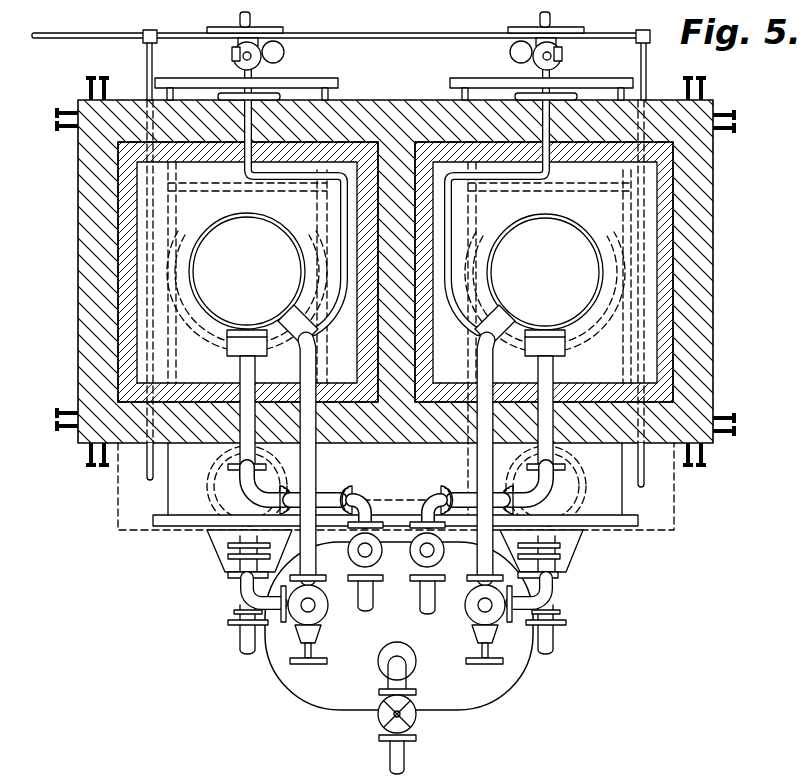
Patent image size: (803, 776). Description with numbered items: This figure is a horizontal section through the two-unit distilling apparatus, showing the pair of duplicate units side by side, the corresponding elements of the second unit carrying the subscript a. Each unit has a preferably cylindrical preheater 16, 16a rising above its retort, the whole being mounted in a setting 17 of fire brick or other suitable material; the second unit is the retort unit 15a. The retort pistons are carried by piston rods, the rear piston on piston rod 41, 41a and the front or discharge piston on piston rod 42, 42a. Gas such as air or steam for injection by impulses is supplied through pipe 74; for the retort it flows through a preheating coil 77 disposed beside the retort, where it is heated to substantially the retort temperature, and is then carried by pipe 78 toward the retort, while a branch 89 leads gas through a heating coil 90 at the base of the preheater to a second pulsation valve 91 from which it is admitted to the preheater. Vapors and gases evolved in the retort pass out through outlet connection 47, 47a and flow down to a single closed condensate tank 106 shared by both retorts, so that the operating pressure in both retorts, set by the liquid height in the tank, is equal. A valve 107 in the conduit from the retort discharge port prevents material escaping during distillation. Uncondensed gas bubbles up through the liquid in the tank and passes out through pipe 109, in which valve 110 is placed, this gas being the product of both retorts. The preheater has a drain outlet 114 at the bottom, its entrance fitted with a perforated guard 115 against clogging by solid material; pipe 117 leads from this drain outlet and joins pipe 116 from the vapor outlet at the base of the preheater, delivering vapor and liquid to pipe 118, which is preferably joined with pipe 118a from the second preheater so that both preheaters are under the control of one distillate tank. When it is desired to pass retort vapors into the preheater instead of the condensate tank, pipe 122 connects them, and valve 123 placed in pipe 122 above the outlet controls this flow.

The retort of second unit 15a is at (622, 506).
The preheater 16 is at (206, 245).
The preheater of second unit 16a is at (600, 262).
The setting 17 is at (118, 328).
The piston rod 41 is at (238, 641).
The piston rod of second unit 41a is at (557, 641).
The piston rod 42 is at (252, 18).
The piston rod of second unit 42a is at (552, 19).
The outlet connection 47 is at (232, 565).
The outlet connection of second unit 47a is at (560, 566).
The pipe 74 is at (92, 33).
The preheating coil 77 is at (118, 368).
The pipe 78 is at (145, 470).
The branch 89 is at (153, 64).
The heating coil 90 is at (336, 338).
The second pulsation valve 91 is at (262, 66).
The condensate tank 106 is at (292, 673).
The valve 107 is at (245, 585).
The pipe 109 is at (390, 748).
The valve 110 is at (378, 716).
The drain outlet 114 is at (221, 318).
The guard 115 is at (248, 320).
The pipe 116 is at (372, 540).
The pipe 117 is at (228, 478).
The pipe 118 is at (362, 600).
The pipe of second unit 118a is at (428, 602).
The pipe 122 is at (318, 460).
The valve 123 is at (296, 624).